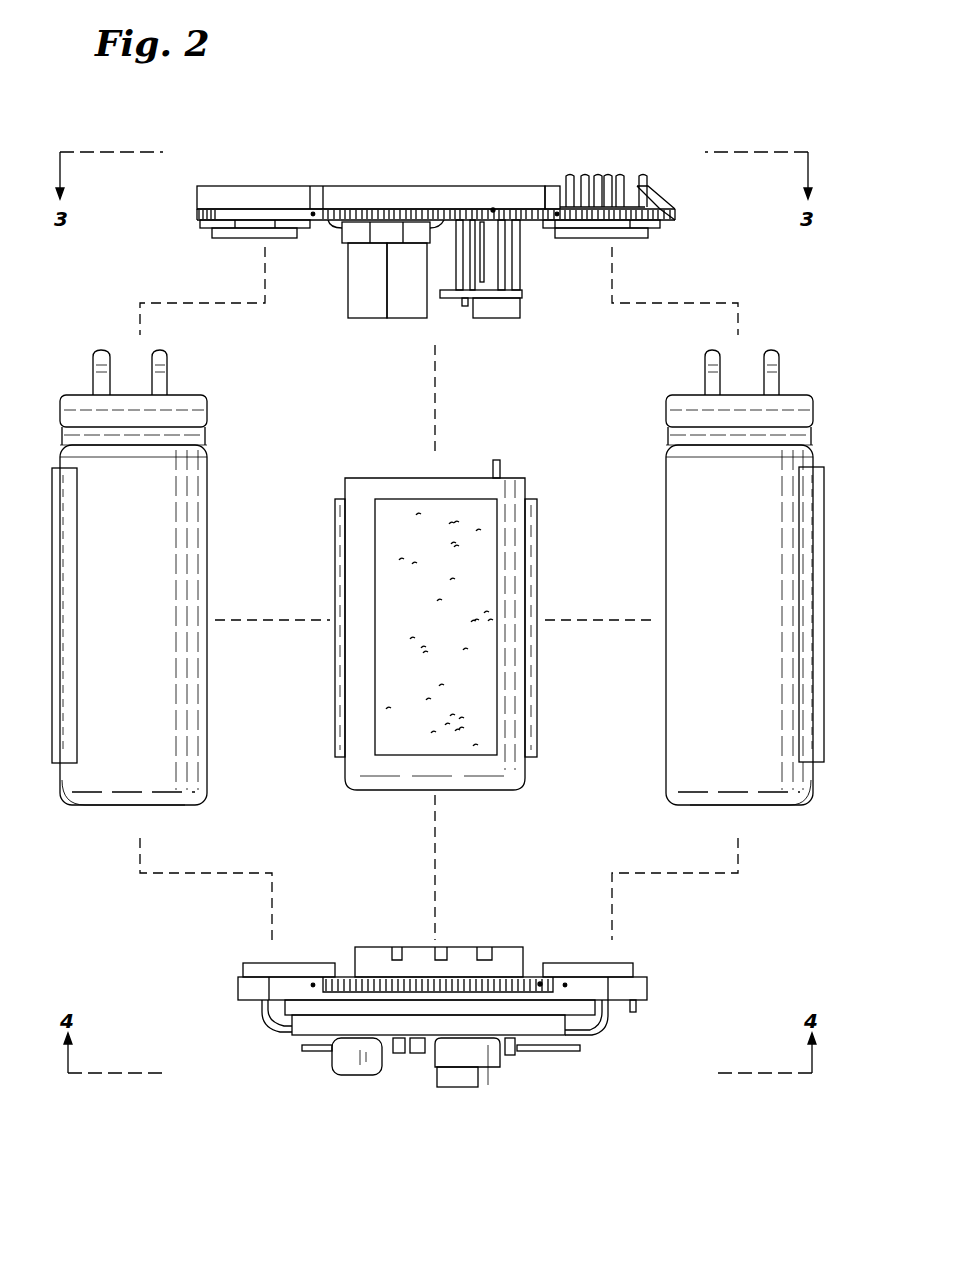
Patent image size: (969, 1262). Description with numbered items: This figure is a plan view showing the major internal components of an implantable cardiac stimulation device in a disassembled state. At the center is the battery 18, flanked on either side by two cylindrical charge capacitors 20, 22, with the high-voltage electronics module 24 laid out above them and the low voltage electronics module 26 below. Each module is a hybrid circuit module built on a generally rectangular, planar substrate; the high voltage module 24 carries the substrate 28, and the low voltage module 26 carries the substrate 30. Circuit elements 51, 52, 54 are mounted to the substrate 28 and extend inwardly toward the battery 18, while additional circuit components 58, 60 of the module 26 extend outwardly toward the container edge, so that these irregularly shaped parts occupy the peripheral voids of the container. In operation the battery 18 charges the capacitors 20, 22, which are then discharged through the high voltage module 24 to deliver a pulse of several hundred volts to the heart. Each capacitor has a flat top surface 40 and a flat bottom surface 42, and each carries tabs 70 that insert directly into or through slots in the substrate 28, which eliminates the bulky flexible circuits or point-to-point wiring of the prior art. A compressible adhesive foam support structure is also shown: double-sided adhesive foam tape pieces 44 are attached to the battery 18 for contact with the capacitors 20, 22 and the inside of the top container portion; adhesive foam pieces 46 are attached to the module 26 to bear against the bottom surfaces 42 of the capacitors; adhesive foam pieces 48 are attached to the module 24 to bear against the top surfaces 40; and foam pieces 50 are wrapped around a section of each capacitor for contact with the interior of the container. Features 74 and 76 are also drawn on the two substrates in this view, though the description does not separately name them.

The battery 18 is at (370, 478).
The charge capacitor 20 is at (802, 452).
The charge capacitor 22 is at (70, 455).
The high-voltage electronics module 24 is at (672, 182).
The low voltage electronics module 26 is at (255, 1036).
The substrate 28 is at (678, 216).
The substrate 30 is at (240, 988).
The flat top surface 40 is at (82, 398).
The flat bottom surface 42 is at (90, 805).
The double-sided adhesive foam tape pieces 44 is at (335, 552).
The adhesive foam pieces 46 is at (262, 963).
The adhesive foam pieces 48 is at (232, 238).
The foam pieces 50 is at (57, 518).
The circuit element 51 is at (365, 318).
The circuit element 52 is at (407, 318).
The circuit element 54 is at (522, 300).
The circuit component 58 is at (350, 1062).
The circuit component 60 is at (500, 1075).
The tabs 70 is at (95, 352).
The top circuit board 74 is at (493, 208).
The bottom board trace 76 is at (540, 980).